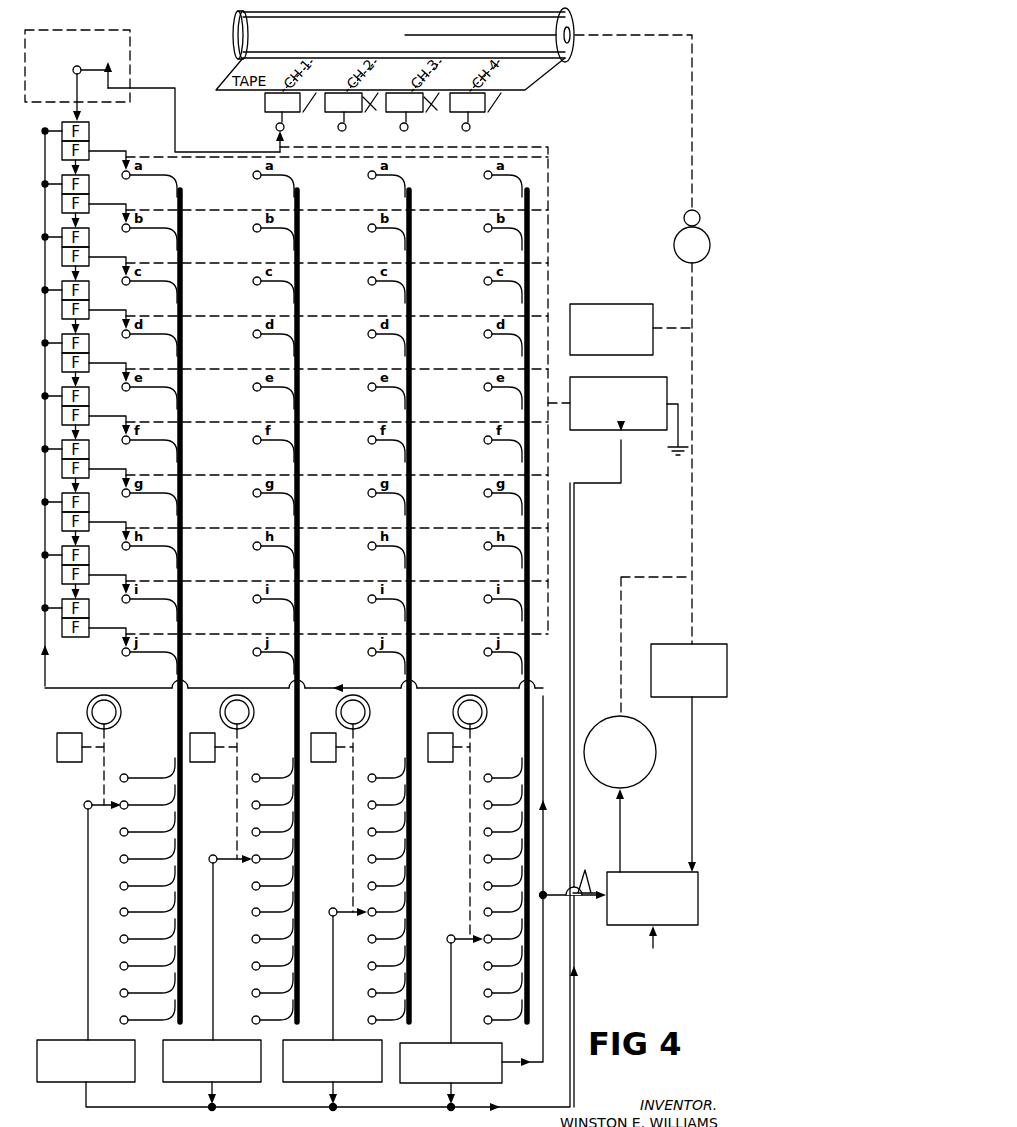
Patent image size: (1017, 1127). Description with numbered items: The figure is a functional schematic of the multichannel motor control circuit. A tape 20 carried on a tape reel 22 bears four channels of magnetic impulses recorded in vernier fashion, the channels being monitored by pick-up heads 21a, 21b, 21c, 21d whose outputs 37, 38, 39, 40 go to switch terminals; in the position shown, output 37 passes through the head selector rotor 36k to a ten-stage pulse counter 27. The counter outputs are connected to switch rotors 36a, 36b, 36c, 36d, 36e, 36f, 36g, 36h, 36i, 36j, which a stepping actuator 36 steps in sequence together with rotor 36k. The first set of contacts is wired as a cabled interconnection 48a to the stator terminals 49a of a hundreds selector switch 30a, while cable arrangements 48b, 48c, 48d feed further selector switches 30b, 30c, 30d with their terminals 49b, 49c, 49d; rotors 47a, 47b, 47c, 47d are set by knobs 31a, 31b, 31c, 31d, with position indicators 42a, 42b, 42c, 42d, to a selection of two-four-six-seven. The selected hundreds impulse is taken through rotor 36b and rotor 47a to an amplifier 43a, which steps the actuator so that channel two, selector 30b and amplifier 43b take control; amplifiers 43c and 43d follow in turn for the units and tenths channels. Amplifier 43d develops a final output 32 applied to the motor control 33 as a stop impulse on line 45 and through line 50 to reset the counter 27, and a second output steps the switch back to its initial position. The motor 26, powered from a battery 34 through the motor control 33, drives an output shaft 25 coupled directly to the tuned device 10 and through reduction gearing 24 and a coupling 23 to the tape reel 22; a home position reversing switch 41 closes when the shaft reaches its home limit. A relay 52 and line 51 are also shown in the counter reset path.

The tuned device 10 is at (633, 304).
The tape 20 is at (240, 30).
The pick-up head 21a is at (265, 103).
The pick-up head 21b is at (388, 112).
The pick-up head 21c is at (452, 112).
The pick-up head 21d is at (496, 100).
The tape reel 22 is at (574, 50).
The mechanical coupling 23 is at (682, 35).
The reduction gearing 24 is at (684, 216).
The output shaft 25 is at (690, 520).
The motor 26 is at (634, 790).
The pulse counter 27 is at (103, 663).
The hundreds selector switch 30a is at (118, 903).
The selector switch 30b is at (242, 958).
The selector switch 30c is at (366, 961).
The selector switch 30d is at (480, 986).
The control knob 31a is at (88, 710).
The selector knob 31b is at (221, 710).
The selector knob 31c is at (338, 710).
The selector knob 31d is at (455, 710).
The stop pulse output 32 is at (530, 1064).
The motor control 33 is at (668, 872).
The battery 34 is at (660, 941).
The stepping actuator 36 is at (646, 377).
The switch rotor 36a is at (126, 156).
The switch rotor 36b is at (126, 209).
The switch rotor 36c is at (126, 262).
The switch rotor 36d is at (126, 315).
The switch rotor 36e is at (126, 368).
The switch rotor 36f is at (126, 421).
The switch rotor 36g is at (126, 474).
The switch rotor 36h is at (126, 527).
The switch rotor 36i is at (126, 580).
The switch rotor 36j is at (126, 633).
The head selector rotor 36k is at (275, 141).
The pick-up head output 37 is at (278, 126).
The pick-up head output 38 is at (340, 125).
The pick-up head output 39 is at (402, 125).
The pick-up head output 40 is at (464, 125).
The home position reversing switch 41 is at (666, 644).
The digit indicator 42a is at (70, 762).
The digit indicator 42b is at (203, 762).
The digit indicator 42c is at (323, 762).
The digit indicator 42d is at (440, 762).
The amplifier 43a is at (120, 1082).
The amplifier 43b is at (244, 1082).
The amplifier 43c is at (364, 1082).
The amplifier 43d is at (492, 1083).
The stop control line 45 is at (591, 898).
The rotor 47a is at (84, 802).
The wiper arm 47b is at (211, 855).
The wiper arm 47c is at (332, 908).
The wiper arm 47d is at (450, 935).
The cabled interconnection 48a is at (181, 682).
The cable arrangement 48b is at (299, 682).
The cable arrangement 48c is at (413, 683).
The cable arrangement 48d is at (528, 680).
The stator terminals 49a is at (120, 830).
The contact 49b is at (252, 885).
The contact 49c is at (368, 882).
The contact 49d is at (484, 884).
The reset line 50 is at (234, 688).
The relay output line 51 is at (210, 152).
The relay 52 is at (75, 90).